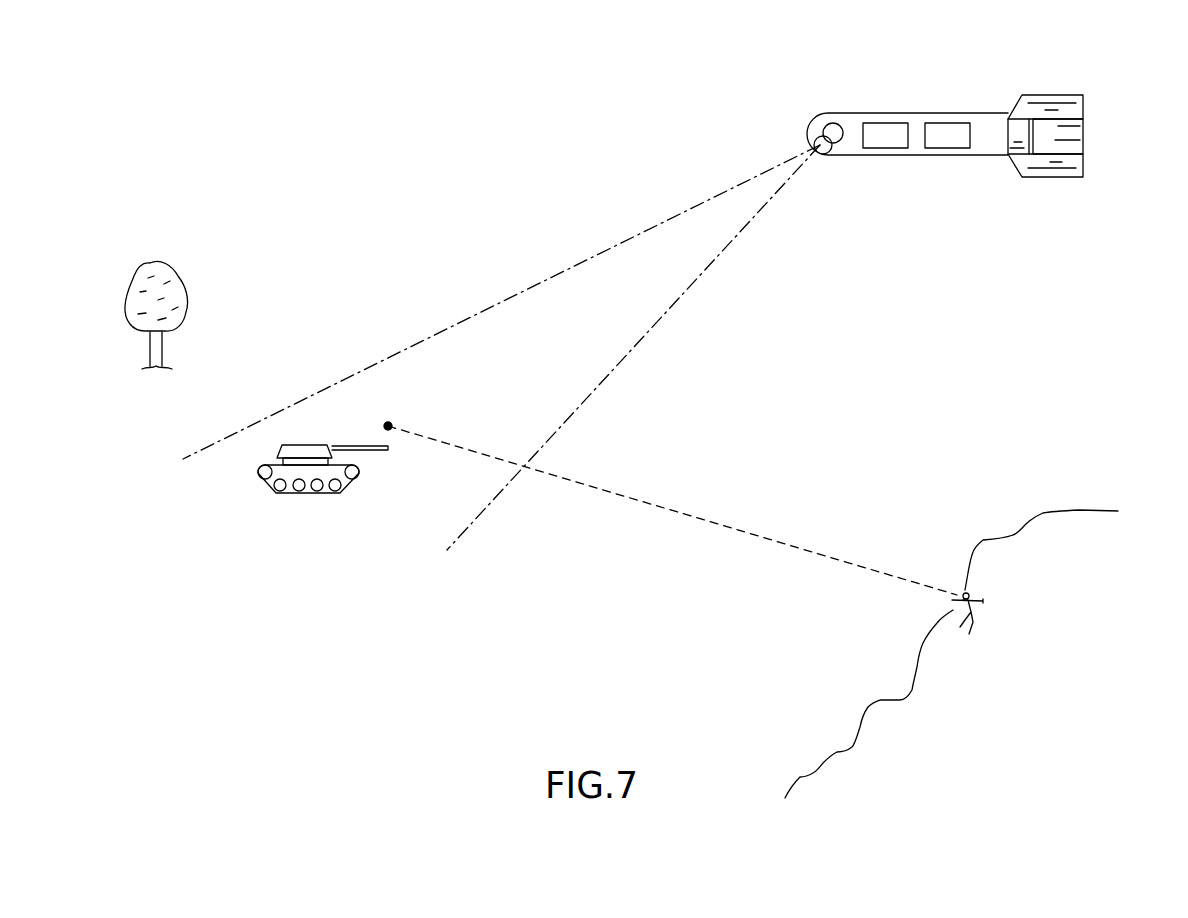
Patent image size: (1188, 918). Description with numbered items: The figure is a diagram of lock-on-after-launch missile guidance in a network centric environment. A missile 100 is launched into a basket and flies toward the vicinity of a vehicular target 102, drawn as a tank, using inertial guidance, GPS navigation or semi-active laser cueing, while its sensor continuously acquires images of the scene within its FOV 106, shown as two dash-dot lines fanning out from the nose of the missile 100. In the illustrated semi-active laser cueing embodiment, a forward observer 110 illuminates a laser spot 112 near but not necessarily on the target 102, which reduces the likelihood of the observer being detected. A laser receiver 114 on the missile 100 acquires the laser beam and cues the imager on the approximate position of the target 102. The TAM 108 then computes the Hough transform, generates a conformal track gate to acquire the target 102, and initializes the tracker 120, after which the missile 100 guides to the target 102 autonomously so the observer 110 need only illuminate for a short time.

The missile 100 is at (1080, 103).
The tracker 120 is at (822, 147).
The laser receiver 114 is at (877, 123).
The TAM 108 is at (940, 123).
The FOV 106 is at (503, 297).
The laser spot 112 is at (391, 425).
The target 102 is at (272, 479).
The forward observer 110 is at (950, 605).